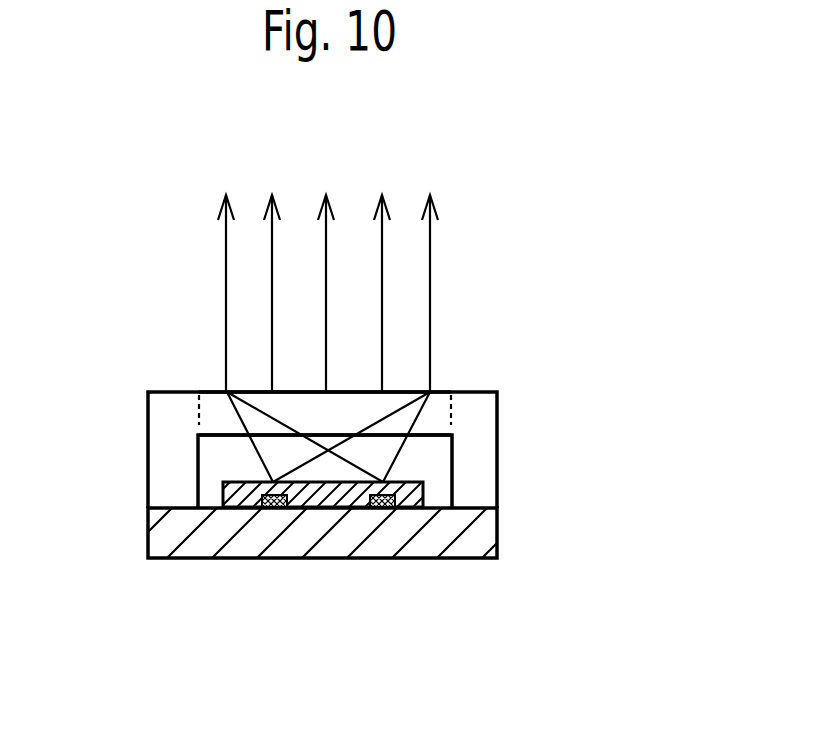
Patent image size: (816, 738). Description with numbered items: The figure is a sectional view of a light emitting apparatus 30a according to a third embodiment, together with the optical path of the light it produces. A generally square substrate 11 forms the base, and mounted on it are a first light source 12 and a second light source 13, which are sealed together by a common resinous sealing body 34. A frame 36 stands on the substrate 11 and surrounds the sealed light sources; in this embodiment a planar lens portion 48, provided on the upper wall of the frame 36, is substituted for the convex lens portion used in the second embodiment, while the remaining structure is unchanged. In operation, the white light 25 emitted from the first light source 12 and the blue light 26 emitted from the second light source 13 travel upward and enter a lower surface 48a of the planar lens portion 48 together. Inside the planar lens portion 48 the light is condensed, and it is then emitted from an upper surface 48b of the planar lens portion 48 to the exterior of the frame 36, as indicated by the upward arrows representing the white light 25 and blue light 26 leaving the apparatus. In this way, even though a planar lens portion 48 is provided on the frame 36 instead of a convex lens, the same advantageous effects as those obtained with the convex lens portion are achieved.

The light emitting apparatus 30a is at (500, 366).
The substrate 11 is at (483, 530).
The frame 36 is at (483, 437).
The planar lens portion 48 is at (218, 403).
The lower surface 48a is at (216, 438).
The upper surface 48b is at (397, 390).
The resinous sealing body 34 is at (319, 498).
The first light source 12 is at (272, 507).
The second light source 13 is at (380, 507).
The white light 25 is at (328, 242).
The blue light 26 is at (432, 175).